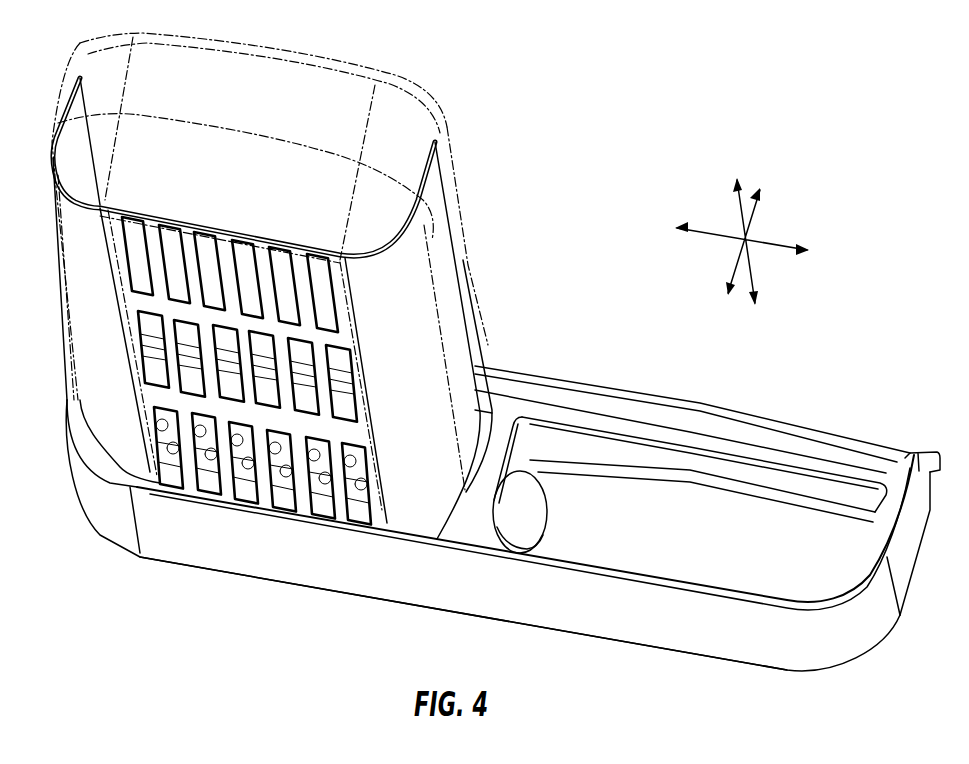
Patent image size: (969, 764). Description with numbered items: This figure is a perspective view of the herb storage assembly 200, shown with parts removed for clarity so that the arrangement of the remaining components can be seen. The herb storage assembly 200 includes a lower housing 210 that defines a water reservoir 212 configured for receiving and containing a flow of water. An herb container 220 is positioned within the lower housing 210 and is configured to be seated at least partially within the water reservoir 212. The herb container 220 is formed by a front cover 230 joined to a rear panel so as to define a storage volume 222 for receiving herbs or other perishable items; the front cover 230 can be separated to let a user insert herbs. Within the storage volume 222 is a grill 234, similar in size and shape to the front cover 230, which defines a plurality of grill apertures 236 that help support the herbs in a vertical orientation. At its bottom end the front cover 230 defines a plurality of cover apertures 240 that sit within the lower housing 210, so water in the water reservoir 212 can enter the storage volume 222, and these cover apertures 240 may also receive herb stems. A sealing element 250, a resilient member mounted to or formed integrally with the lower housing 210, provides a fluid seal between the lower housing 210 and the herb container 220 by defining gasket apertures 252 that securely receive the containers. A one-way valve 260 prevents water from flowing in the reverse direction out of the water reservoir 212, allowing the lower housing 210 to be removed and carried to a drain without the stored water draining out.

The herb storage assembly 200 is at (577, 137).
The lower housing 210 is at (850, 633).
The water reservoir 212 is at (744, 515).
The herb container 220 is at (457, 126).
The storage volume 222 is at (220, 150).
The front cover 230 is at (110, 73).
The grill 234 is at (100, 253).
The grill apertures 236 is at (142, 343).
The cover apertures 240 is at (208, 477).
The sealing element 250 is at (470, 544).
The gasket apertures 252 is at (517, 460).
The one-way valve 260 is at (522, 516).